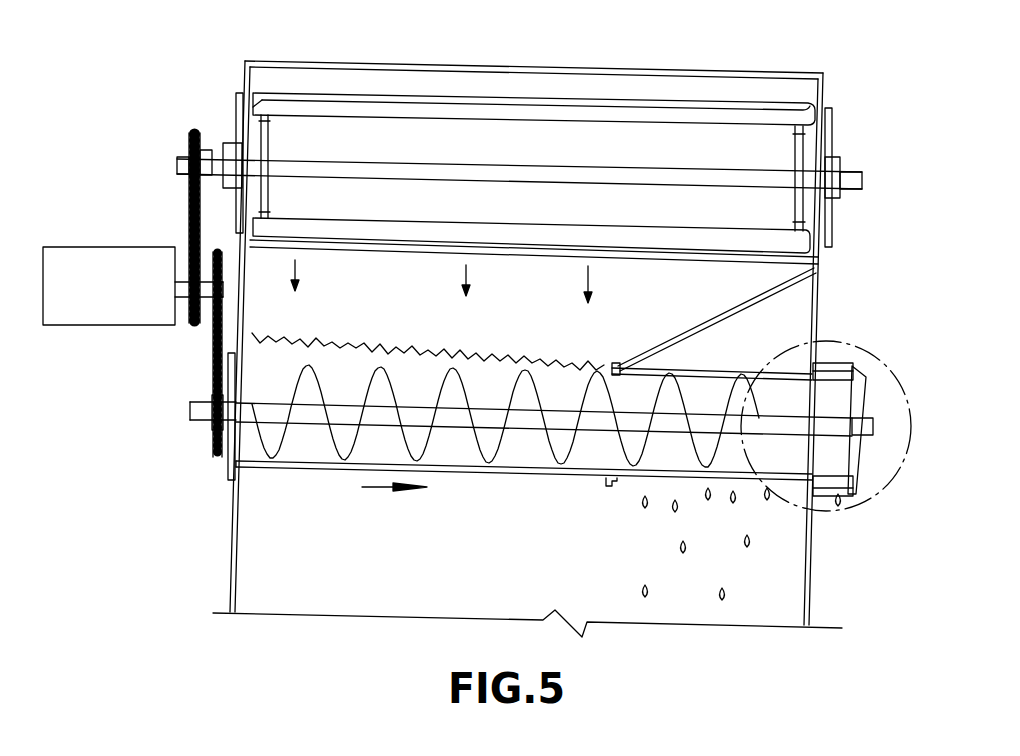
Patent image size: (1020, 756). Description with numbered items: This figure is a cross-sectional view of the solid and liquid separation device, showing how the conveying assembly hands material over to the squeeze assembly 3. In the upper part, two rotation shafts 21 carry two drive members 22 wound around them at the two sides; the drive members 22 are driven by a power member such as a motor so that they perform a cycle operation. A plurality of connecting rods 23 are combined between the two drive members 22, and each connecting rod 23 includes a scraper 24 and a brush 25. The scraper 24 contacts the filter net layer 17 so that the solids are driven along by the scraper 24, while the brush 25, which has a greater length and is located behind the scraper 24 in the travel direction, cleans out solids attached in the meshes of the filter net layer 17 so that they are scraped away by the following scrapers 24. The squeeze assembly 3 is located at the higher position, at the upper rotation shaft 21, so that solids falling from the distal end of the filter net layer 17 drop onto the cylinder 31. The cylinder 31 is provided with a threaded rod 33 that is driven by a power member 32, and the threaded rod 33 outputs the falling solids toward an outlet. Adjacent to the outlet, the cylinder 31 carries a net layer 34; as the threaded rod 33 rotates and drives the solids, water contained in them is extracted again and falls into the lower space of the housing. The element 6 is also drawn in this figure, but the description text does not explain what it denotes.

The discharge end assembly 3 is at (858, 334).
The drain outlet 6 is at (836, 500).
The falling material 17 is at (366, 253).
The roller shaft 21 is at (758, 172).
The bearings 22 is at (828, 117).
The conveyor 23 is at (508, 128).
The upper plate 24 is at (372, 107).
The belt 25 is at (480, 103).
The trough 31 is at (442, 477).
The motor 32 is at (98, 314).
The screw 33 is at (298, 413).
The drain bracket 34 is at (623, 487).